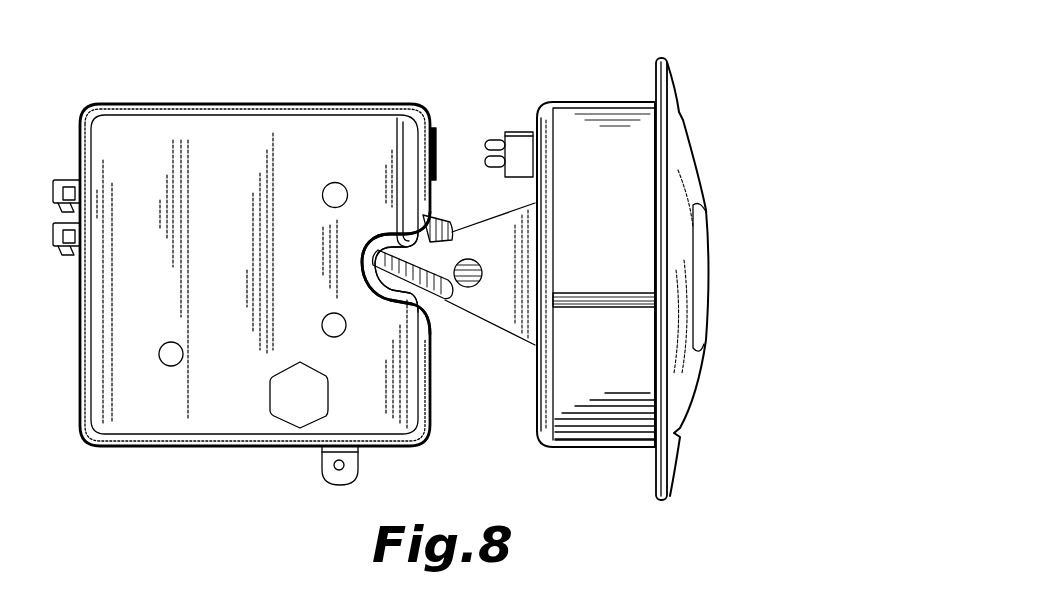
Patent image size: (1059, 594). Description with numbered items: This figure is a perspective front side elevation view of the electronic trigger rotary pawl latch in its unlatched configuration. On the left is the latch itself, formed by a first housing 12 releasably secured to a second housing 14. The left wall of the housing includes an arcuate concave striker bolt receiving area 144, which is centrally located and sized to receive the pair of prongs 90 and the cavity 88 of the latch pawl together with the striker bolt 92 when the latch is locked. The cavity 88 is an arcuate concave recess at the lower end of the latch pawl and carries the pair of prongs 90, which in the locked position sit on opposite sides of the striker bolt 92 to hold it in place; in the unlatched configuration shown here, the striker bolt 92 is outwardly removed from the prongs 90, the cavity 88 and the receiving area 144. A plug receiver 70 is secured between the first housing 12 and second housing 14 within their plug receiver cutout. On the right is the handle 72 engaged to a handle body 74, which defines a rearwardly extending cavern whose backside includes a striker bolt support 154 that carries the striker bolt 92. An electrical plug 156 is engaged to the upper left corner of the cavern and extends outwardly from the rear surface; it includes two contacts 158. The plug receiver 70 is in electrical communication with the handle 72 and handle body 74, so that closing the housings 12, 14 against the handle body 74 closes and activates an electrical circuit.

The first housing 12 is at (241, 266).
The second housing 14 is at (215, 193).
The striker bolt receiving area 144 is at (360, 262).
The cavity 88 is at (392, 234).
The plug receiver 70 is at (446, 200).
The pair of prongs 90 is at (447, 213).
The striker bolt support 154 is at (497, 250).
The striker bolt 92 is at (470, 285).
The electrical plug 156 is at (520, 147).
The contacts 158 is at (490, 140).
The handle body 74 is at (603, 163).
The handle 72 is at (710, 270).